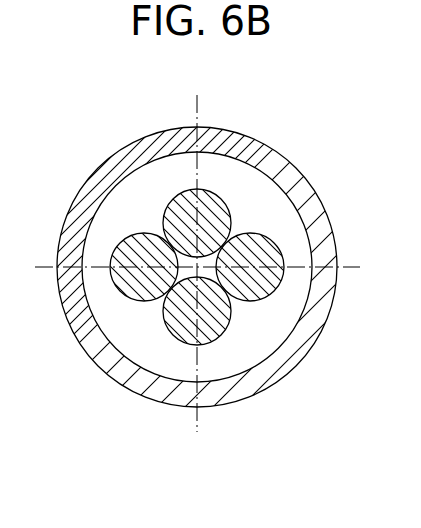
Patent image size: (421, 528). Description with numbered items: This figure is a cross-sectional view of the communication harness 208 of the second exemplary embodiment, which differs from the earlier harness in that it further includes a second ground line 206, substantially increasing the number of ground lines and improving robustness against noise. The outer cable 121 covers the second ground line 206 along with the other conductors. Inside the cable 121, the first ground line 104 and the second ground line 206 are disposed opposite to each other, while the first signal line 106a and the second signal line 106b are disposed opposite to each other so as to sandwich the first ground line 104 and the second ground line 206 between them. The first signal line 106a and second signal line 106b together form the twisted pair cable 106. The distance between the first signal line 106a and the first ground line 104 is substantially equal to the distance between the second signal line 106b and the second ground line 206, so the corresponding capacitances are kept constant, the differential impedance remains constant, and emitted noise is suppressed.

The communication harness 208 is at (70, 167).
The cable 121 is at (306, 182).
The first ground line 104 is at (203, 189).
The second ground line 206 is at (166, 214).
The twisted pair cable 106 is at (202, 457).
The first signal line 106a is at (148, 300).
The second signal line 106b is at (250, 300).